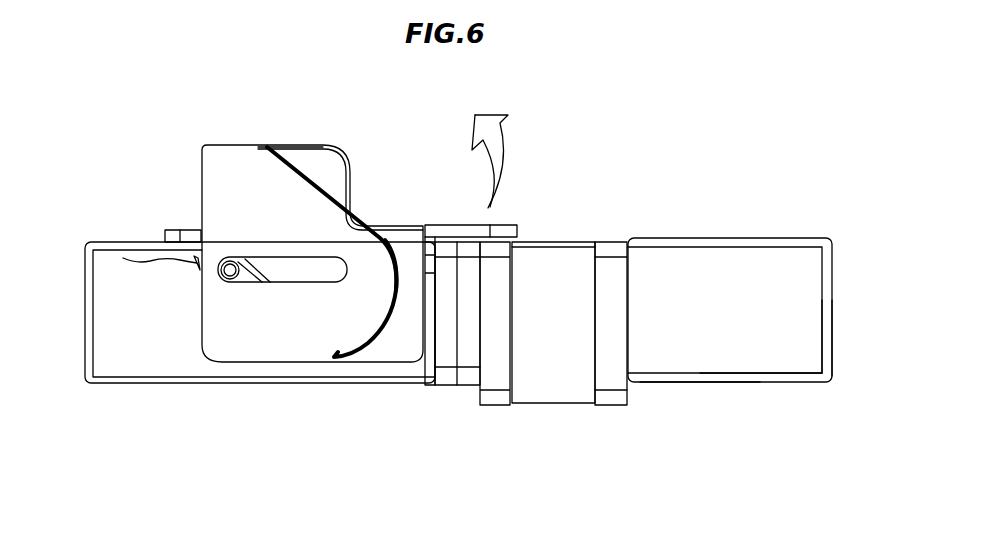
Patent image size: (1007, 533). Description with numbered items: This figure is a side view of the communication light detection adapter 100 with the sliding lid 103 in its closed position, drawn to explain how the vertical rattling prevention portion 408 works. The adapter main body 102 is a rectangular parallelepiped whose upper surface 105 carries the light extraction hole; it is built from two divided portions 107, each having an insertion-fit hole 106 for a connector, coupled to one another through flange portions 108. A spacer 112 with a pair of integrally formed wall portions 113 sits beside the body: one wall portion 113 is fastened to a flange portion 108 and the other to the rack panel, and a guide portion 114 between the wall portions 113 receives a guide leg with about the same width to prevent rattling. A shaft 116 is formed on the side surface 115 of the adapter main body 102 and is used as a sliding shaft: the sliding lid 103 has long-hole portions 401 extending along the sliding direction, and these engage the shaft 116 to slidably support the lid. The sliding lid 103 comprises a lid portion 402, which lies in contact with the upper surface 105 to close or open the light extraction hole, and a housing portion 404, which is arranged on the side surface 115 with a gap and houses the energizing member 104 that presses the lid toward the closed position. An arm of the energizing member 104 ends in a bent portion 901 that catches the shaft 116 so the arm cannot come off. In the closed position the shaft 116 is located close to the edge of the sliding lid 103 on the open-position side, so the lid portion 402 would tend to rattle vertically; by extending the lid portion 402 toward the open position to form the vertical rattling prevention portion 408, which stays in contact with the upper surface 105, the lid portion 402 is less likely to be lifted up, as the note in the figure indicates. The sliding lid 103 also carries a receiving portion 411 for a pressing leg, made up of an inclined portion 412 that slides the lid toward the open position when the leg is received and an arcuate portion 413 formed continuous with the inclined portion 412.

The communication light detection adapter 100 is at (730, 132).
The adapter main body 102 is at (142, 391).
The sliding lid 103 is at (342, 144).
The energizing member 104 is at (251, 248).
The upper surface 105 is at (723, 238).
The insertion-fit hole 106 is at (833, 364).
The divided portion 107 is at (683, 383).
The flange portion 108 is at (443, 382).
The spacer 112 is at (523, 404).
The wall portion 113 is at (608, 404).
The guide portion 114 is at (568, 396).
The side surface 115 is at (757, 358).
The shaft 116 is at (232, 278).
The long-hole portion 401 is at (307, 273).
The lid portion 402 is at (465, 223).
The housing portion 404 is at (382, 357).
The vertical rattling prevention portion 408 is at (165, 228).
The receiving portion 411 is at (353, 343).
The inclined portion 412 is at (317, 178).
The arcuate portion 413 is at (395, 288).
The bent portion 901 is at (123, 258).